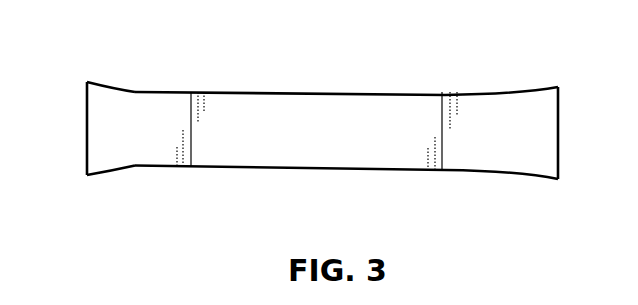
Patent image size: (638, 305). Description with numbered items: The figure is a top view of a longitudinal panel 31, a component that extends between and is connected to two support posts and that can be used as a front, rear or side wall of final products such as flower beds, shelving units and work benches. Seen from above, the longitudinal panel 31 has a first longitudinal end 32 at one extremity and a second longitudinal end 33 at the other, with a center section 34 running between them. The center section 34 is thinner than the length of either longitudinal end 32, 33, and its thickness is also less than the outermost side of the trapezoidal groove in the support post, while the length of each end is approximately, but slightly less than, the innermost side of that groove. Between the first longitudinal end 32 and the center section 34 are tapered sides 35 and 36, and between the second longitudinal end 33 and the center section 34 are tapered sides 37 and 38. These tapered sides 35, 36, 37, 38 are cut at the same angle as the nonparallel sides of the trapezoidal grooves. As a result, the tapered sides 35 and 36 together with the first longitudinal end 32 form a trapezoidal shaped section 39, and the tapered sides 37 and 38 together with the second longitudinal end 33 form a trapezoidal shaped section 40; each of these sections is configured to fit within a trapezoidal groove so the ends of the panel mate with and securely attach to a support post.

The longitudinal panel 31 is at (345, 73).
The first longitudinal end 32 is at (86, 151).
The second longitudinal end 33 is at (562, 163).
The center section 34 is at (248, 110).
The tapered side 35 is at (113, 87).
The tapered side 36 is at (115, 172).
The tapered side 37 is at (532, 90).
The tapered side 38 is at (532, 180).
The trapezoidal shaped section 39 is at (108, 106).
The trapezoidal shaped section 40 is at (547, 110).